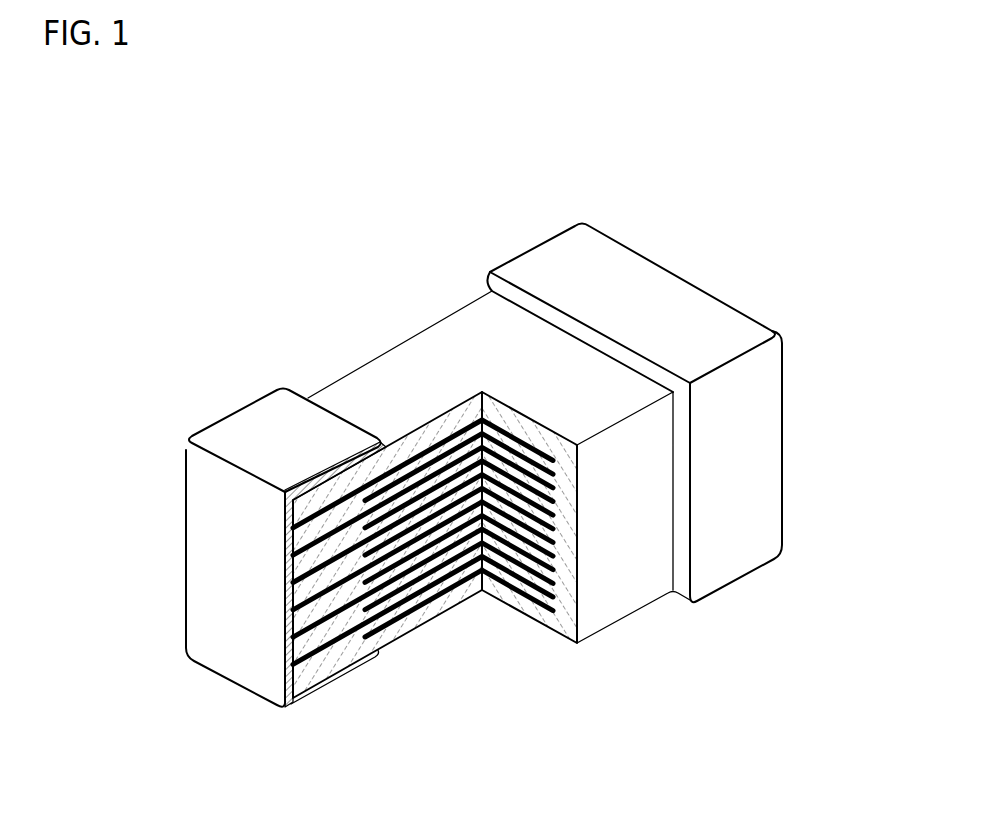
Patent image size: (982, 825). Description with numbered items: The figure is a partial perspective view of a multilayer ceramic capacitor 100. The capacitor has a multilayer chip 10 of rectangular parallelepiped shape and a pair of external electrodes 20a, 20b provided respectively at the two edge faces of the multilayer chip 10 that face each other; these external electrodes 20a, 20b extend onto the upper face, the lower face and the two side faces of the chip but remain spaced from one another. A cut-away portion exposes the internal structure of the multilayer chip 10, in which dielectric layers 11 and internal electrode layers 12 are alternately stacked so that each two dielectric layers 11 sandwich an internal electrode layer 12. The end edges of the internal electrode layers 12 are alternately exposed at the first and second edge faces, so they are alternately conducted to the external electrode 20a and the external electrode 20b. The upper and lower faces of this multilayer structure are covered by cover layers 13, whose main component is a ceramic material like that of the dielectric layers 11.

The multilayer ceramic capacitor 100 is at (880, 155).
The multilayer chip 10 is at (340, 370).
The dielectric layer 11 is at (403, 602).
The internal electrode layer 12 is at (438, 572).
The cover layer 13 is at (452, 333).
The external electrode 20a is at (247, 410).
The external electrode 20b is at (538, 262).